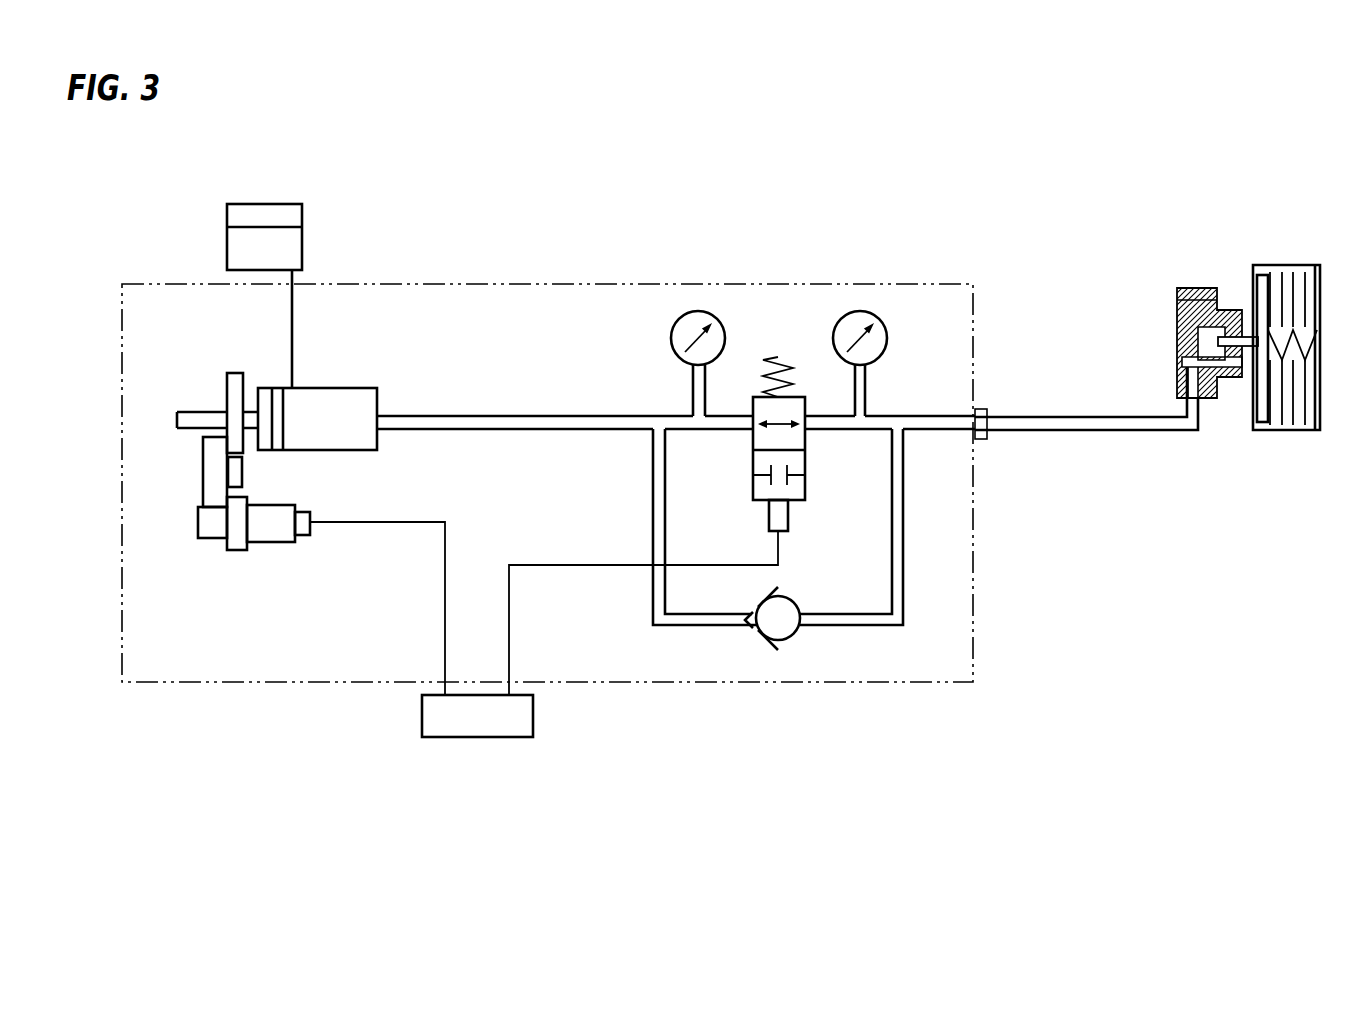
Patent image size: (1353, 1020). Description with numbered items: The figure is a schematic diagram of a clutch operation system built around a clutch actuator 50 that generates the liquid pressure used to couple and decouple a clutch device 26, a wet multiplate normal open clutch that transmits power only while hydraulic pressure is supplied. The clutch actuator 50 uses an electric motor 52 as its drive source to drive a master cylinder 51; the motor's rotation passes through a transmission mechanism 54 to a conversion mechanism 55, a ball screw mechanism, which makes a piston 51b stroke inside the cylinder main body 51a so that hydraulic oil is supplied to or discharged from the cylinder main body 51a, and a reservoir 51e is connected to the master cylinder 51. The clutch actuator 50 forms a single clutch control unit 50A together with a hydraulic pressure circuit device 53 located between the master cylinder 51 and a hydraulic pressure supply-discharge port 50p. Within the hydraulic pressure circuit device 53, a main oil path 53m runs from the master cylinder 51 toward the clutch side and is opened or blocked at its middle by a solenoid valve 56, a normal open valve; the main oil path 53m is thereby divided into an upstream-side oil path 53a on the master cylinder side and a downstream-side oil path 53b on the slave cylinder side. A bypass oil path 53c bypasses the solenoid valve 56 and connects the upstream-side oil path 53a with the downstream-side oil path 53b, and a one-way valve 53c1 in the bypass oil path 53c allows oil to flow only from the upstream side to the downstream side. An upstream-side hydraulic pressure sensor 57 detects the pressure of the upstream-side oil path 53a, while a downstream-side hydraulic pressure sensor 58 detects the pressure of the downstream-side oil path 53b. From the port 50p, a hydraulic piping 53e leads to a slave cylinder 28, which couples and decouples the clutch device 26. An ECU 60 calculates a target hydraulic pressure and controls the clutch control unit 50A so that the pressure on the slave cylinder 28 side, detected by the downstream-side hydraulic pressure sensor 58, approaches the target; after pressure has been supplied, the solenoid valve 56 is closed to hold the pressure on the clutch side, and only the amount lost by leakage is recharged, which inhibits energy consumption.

The clutch device 26 is at (1309, 245).
The slave cylinder 28 is at (1192, 275).
The clutch actuator 50 is at (188, 308).
The clutch control unit 50A is at (404, 270).
The hydraulic pressure supply-discharge port 50p is at (987, 440).
The master cylinder 51 is at (302, 408).
The cylinder main body 51a is at (340, 388).
The piston 51b is at (281, 438).
The reservoir 51e is at (270, 204).
The electric motor 52 is at (268, 543).
The hydraulic pressure circuit device 53 is at (551, 310).
The upstream-side oil path 53a is at (497, 416).
The downstream-side oil path 53b is at (912, 416).
The bypass oil path 53c is at (868, 625).
The one-way valve 53c1 is at (793, 658).
The hydraulic piping 53e is at (1057, 417).
The main oil path 53m is at (676, 368).
The transmission mechanism 54 is at (205, 473).
The conversion mechanism 55 is at (230, 382).
The solenoid valve 56 is at (810, 506).
The upstream-side hydraulic pressure sensor 57 is at (670, 331).
The downstream-side hydraulic pressure sensor 58 is at (832, 331).
The ECU 60 is at (470, 738).